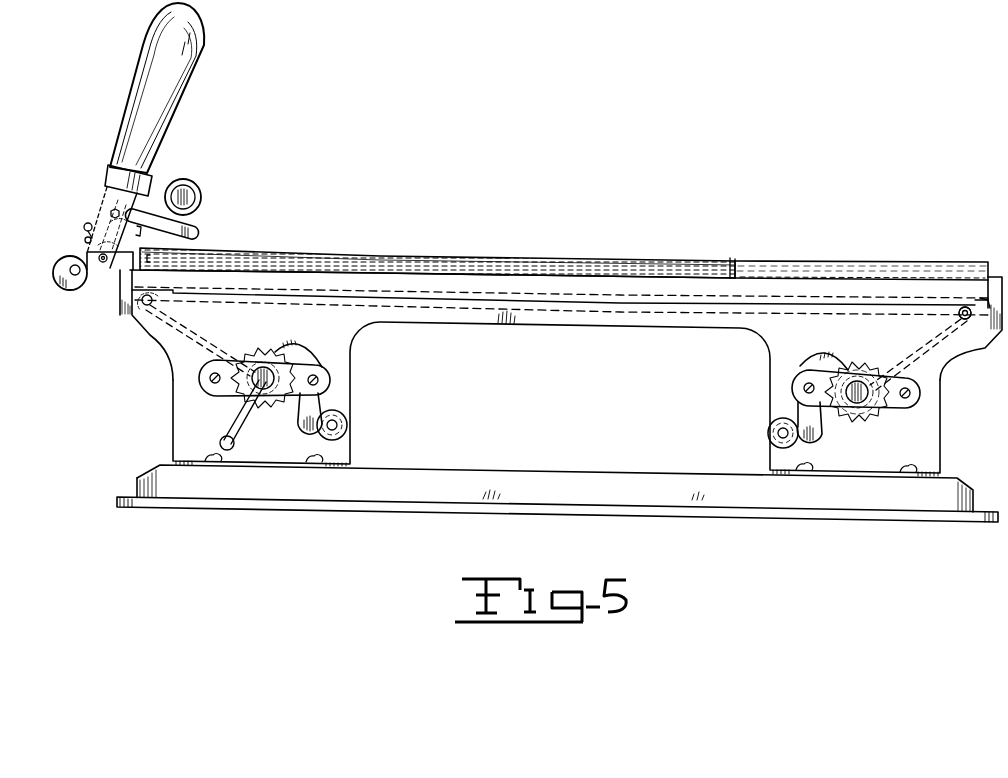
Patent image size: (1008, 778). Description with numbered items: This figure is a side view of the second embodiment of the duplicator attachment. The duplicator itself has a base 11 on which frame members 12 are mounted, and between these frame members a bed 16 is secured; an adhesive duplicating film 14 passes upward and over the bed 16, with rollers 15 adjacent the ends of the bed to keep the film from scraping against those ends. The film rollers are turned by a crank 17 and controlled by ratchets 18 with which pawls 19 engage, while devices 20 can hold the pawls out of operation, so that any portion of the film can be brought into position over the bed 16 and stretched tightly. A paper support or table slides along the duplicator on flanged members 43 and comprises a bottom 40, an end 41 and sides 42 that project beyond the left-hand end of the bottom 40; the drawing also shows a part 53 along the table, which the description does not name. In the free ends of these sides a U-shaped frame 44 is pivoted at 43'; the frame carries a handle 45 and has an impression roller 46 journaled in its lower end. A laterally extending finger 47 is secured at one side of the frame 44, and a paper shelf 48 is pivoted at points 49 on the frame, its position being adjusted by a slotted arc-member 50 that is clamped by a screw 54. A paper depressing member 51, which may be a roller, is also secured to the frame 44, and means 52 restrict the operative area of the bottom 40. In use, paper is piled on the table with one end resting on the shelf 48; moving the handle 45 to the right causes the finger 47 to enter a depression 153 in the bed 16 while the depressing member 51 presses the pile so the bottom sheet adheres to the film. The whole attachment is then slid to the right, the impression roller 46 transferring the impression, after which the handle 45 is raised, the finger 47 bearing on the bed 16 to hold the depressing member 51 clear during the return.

The base 11 is at (198, 498).
The frame members 12 is at (178, 410).
The adhesive duplicating film 14 is at (940, 372).
The rollers 15 is at (157, 302).
The bed 16 is at (459, 308).
The crank 17 is at (232, 424).
The ratchets 18 is at (234, 340).
The pawls 19 is at (313, 356).
The devices 20 is at (348, 428).
The bottom 40 is at (821, 272).
The end 41 is at (985, 272).
The sides 42 is at (763, 277).
The flanged members 43 is at (976, 279).
The pivot 43' is at (110, 273).
The U-shaped frame 44 is at (105, 189).
The handle 45 is at (198, 65).
The impression roller 46 is at (54, 274).
The finger 47 is at (198, 231).
The paper support or shelf 48 is at (161, 265).
The pivot points 49 is at (82, 225).
The slotted arc-member 50 is at (140, 224).
The paper depressing member 51 is at (203, 195).
The means 52 is at (737, 262).
The rubber faced blade 53 is at (213, 251).
The screw 54 is at (108, 211).
The depression 153 is at (195, 300).